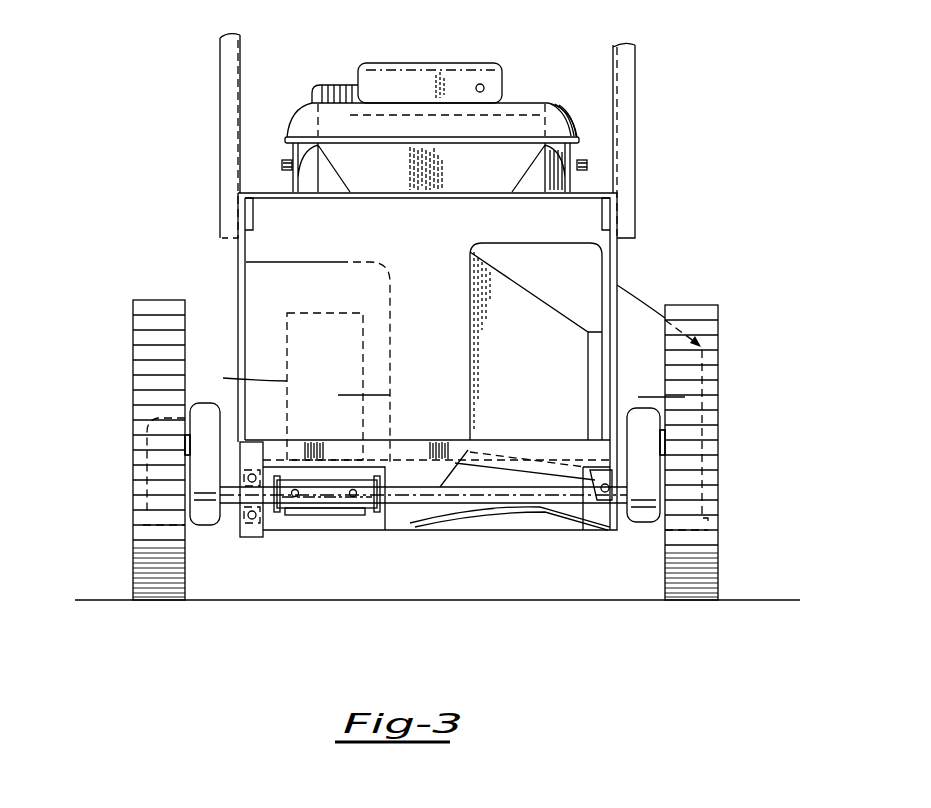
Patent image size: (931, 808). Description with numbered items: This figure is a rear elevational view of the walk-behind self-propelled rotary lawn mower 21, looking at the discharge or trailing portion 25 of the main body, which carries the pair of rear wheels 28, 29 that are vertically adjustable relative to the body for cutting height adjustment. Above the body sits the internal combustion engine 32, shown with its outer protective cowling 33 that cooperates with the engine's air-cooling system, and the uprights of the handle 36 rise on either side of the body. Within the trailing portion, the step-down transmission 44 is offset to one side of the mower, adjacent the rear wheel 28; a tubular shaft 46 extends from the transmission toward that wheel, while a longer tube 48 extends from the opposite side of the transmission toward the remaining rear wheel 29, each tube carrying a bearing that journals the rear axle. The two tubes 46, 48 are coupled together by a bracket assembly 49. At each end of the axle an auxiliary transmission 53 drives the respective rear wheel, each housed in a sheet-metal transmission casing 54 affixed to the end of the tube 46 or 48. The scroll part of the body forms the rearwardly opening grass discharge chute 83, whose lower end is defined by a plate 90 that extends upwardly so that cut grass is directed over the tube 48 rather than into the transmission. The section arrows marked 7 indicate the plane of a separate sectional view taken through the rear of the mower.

The lawn mower 21 is at (672, 88).
The discharge or trailing portion 25 is at (268, 299).
The rear wheel 28 is at (145, 332).
The rear wheel 29 is at (697, 310).
The internal combustion engine 32 is at (532, 96).
The outer protective cowling 33 is at (298, 127).
The handle 36 is at (218, 62).
The step-down transmission 44 is at (238, 378).
The tubular shaft 46 is at (232, 505).
The tube 48 is at (453, 503).
The bracket assembly 49 is at (322, 500).
The auxiliary transmission 53 is at (196, 535).
The transmission casing 54 is at (190, 422).
The grass discharge chute 83 is at (468, 326).
The plate 90 is at (540, 515).
The section line 7- 7 is at (350, 414).